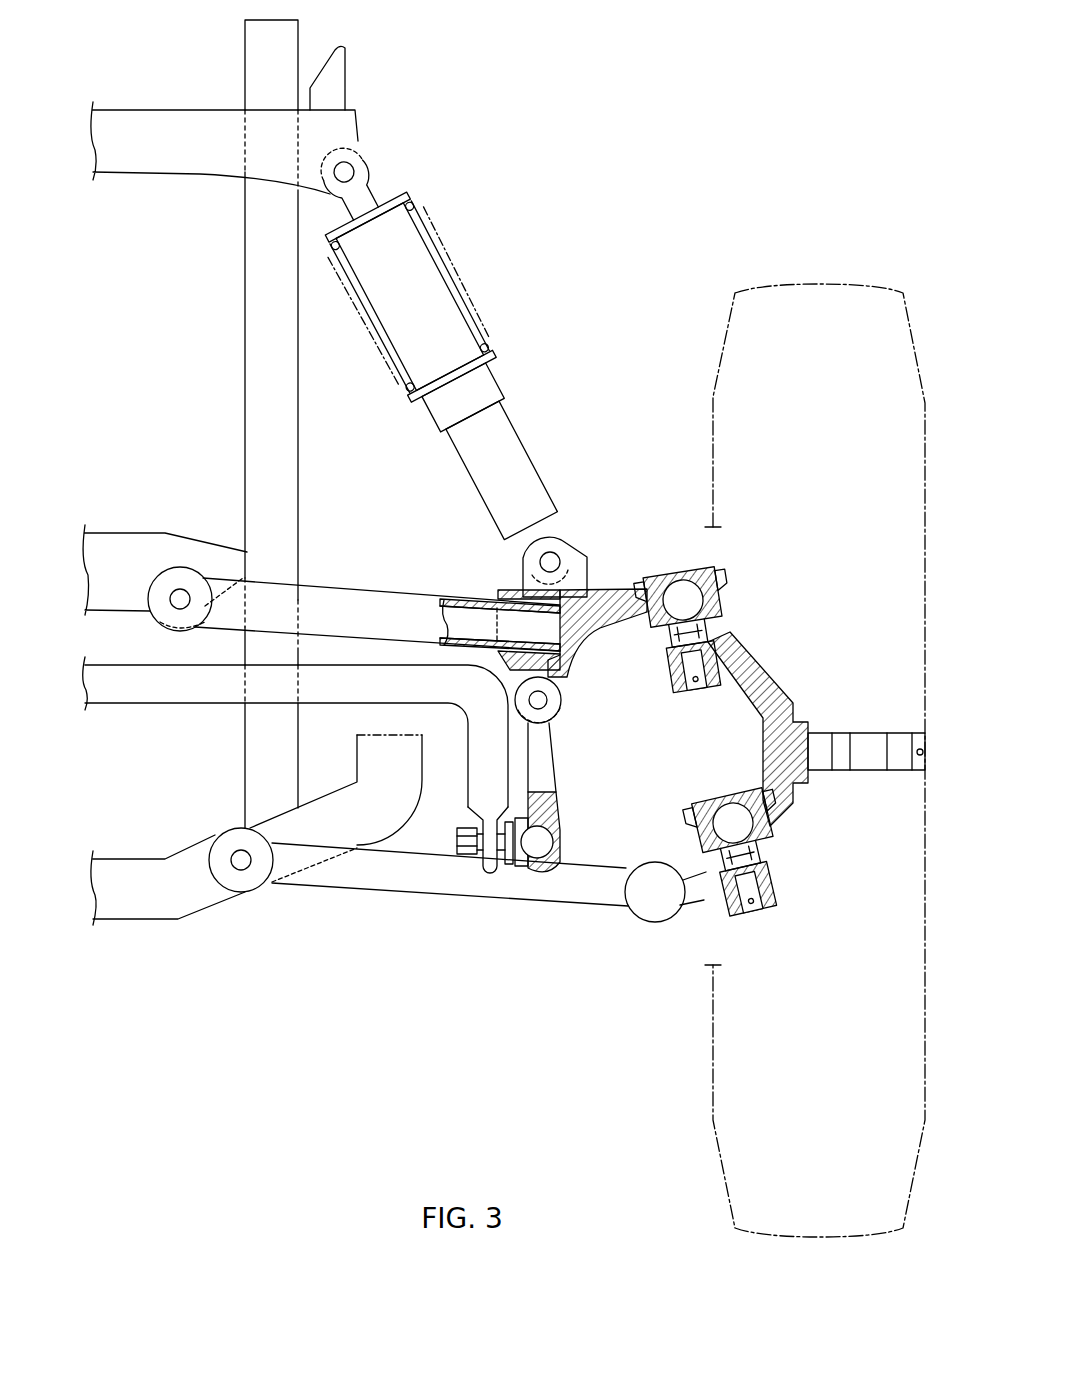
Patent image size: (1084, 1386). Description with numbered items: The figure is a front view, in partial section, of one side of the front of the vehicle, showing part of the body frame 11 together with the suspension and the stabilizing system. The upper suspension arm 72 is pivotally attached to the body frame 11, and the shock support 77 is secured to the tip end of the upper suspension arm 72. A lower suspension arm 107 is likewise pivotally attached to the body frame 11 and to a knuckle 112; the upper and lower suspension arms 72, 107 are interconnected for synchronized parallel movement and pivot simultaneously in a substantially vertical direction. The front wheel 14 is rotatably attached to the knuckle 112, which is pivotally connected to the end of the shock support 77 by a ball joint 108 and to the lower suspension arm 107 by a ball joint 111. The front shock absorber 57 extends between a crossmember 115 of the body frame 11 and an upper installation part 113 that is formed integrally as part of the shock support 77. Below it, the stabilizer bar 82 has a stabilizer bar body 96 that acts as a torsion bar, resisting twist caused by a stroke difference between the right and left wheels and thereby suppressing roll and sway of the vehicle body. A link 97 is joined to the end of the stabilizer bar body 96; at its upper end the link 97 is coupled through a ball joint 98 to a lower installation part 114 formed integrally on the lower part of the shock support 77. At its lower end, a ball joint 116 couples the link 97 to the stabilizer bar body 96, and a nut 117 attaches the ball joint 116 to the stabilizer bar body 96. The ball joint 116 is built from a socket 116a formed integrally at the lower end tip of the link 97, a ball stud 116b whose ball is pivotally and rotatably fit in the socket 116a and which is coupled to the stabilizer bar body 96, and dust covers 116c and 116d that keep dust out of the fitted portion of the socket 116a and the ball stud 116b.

The body frame 11 is at (160, 531).
The front wheel 14 is at (805, 285).
The front shock absorber 57 is at (480, 290).
The upper suspension arm 72 is at (353, 578).
The shock support 77 is at (592, 552).
The stabilizer bar 82 is at (547, 884).
The stabilizer bar body 96 is at (163, 706).
The link 97 is at (556, 804).
The ball joint 98 is at (562, 712).
The lower suspension arm 107 is at (347, 892).
The ball joint 108 is at (708, 574).
The ball joint 111 is at (784, 853).
The knuckle 112 is at (760, 740).
The upper installation part 113 is at (522, 590).
The lower installation part 114 is at (566, 657).
The crossmember 115 is at (160, 108).
The ball joint 116 is at (501, 862).
The socket 116a is at (574, 866).
The ball stud 116b is at (548, 842).
The dust cover 116c is at (521, 866).
The dust cover 116d is at (556, 826).
The nut 117 is at (454, 860).